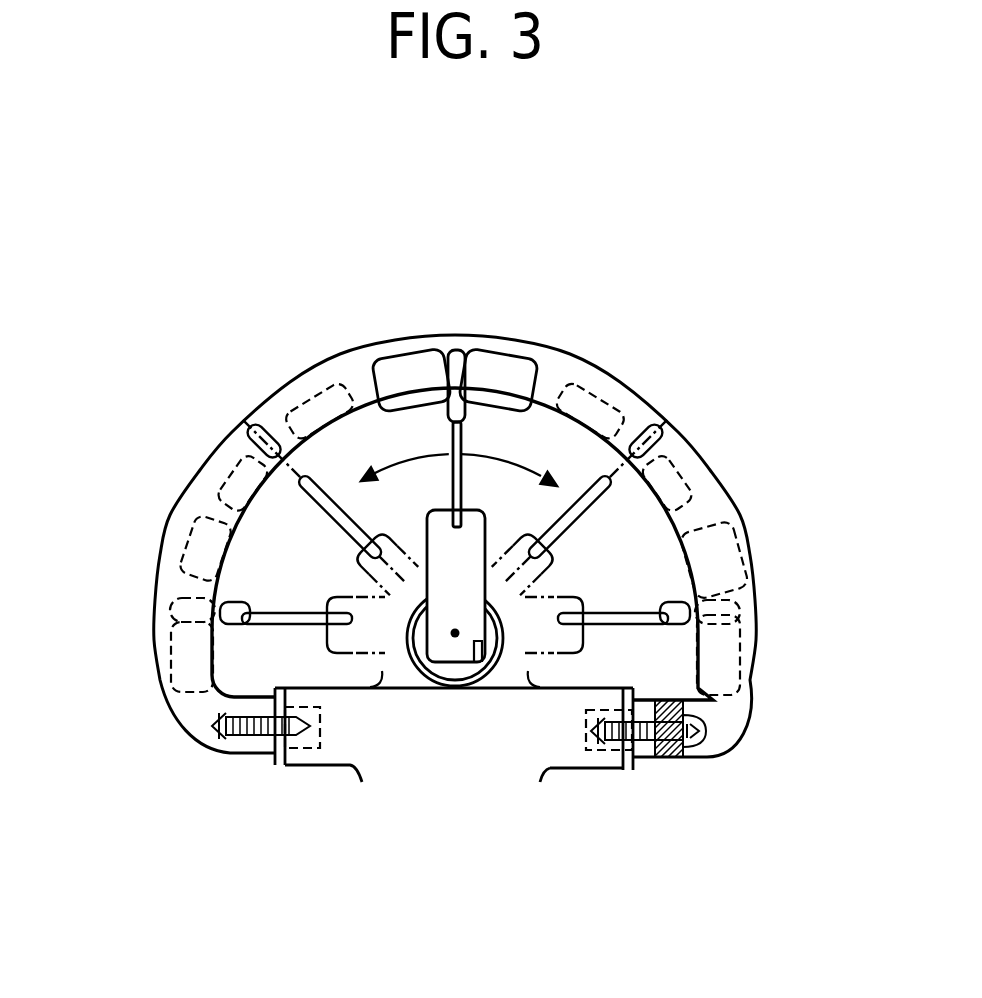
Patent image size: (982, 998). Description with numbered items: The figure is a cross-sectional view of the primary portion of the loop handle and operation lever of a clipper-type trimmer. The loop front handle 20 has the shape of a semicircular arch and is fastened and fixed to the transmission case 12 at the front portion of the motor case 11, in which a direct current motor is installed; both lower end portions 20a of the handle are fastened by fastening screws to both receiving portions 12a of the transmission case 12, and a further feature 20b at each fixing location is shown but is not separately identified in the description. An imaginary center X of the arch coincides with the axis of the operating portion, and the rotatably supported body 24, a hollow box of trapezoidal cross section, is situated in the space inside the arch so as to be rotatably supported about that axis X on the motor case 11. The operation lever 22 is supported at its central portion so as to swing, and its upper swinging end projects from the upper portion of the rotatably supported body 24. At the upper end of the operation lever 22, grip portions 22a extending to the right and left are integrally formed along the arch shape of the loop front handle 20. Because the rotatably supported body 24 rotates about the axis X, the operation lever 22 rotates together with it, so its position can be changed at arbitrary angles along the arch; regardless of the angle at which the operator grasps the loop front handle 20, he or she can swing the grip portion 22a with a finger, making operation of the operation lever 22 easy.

The motor case 11 is at (505, 632).
The transmission case 12 is at (481, 750).
The receiving portions 12a is at (323, 752).
The loop front handle 20 is at (727, 497).
The lower end portions 20a is at (737, 710).
The fixing screw 20b is at (208, 752).
The operation lever 22 is at (463, 442).
The grip portions 22a is at (406, 372).
The rotatably supported body 24 is at (442, 623).
The imaginary center X is at (456, 636).